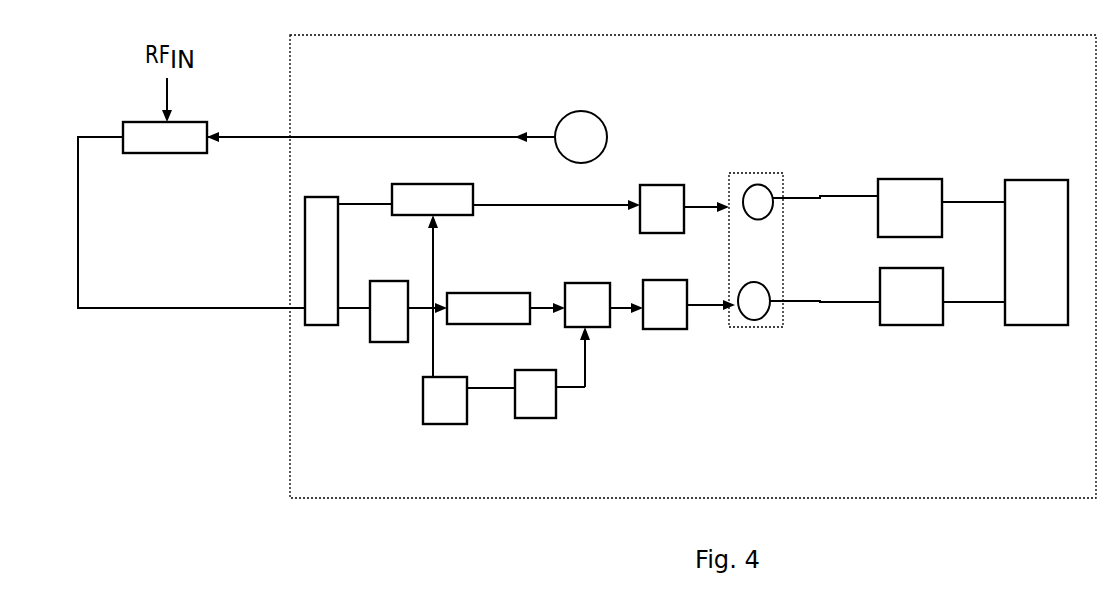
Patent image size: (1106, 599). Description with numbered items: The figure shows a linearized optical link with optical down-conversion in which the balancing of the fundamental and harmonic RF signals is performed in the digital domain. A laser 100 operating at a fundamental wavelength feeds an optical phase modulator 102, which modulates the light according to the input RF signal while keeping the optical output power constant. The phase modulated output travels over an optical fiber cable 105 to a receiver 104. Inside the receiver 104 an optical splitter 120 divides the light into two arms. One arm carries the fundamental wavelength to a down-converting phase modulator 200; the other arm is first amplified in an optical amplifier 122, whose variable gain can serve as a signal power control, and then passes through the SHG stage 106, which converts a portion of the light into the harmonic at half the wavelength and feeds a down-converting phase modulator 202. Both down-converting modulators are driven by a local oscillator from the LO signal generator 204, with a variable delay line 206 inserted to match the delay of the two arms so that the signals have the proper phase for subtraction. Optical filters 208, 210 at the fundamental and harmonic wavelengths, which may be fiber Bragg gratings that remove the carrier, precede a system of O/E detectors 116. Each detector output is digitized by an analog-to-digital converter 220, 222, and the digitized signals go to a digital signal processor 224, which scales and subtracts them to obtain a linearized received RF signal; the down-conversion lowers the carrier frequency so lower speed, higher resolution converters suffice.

The laser 100 is at (407, 121).
The optical phase modulator 102 is at (165, 155).
The receiver 104 is at (693, 285).
The optical fiber cable 105 is at (191, 241).
The SHG stage 106 is at (469, 328).
The O/E detectors 116 is at (756, 233).
The optical splitter 120 is at (327, 241).
The optical amplifier 122 is at (374, 330).
The down-converting phase modulator at the fundamental wavelength 200 is at (405, 267).
The down-converting phase modulator at the harmonic wavelength 202 is at (574, 320).
The LO signal generator 204 is at (467, 419).
The variable delay line 206 is at (546, 414).
The optical filter at the fundamental wavelength 208 is at (601, 193).
The optical filter at the harmonic wavelength 210 is at (672, 324).
The analog-to-digital converter 220 is at (889, 192).
The analog-to-digital converter 222 is at (887, 317).
The digital signal processor 224 is at (1036, 232).